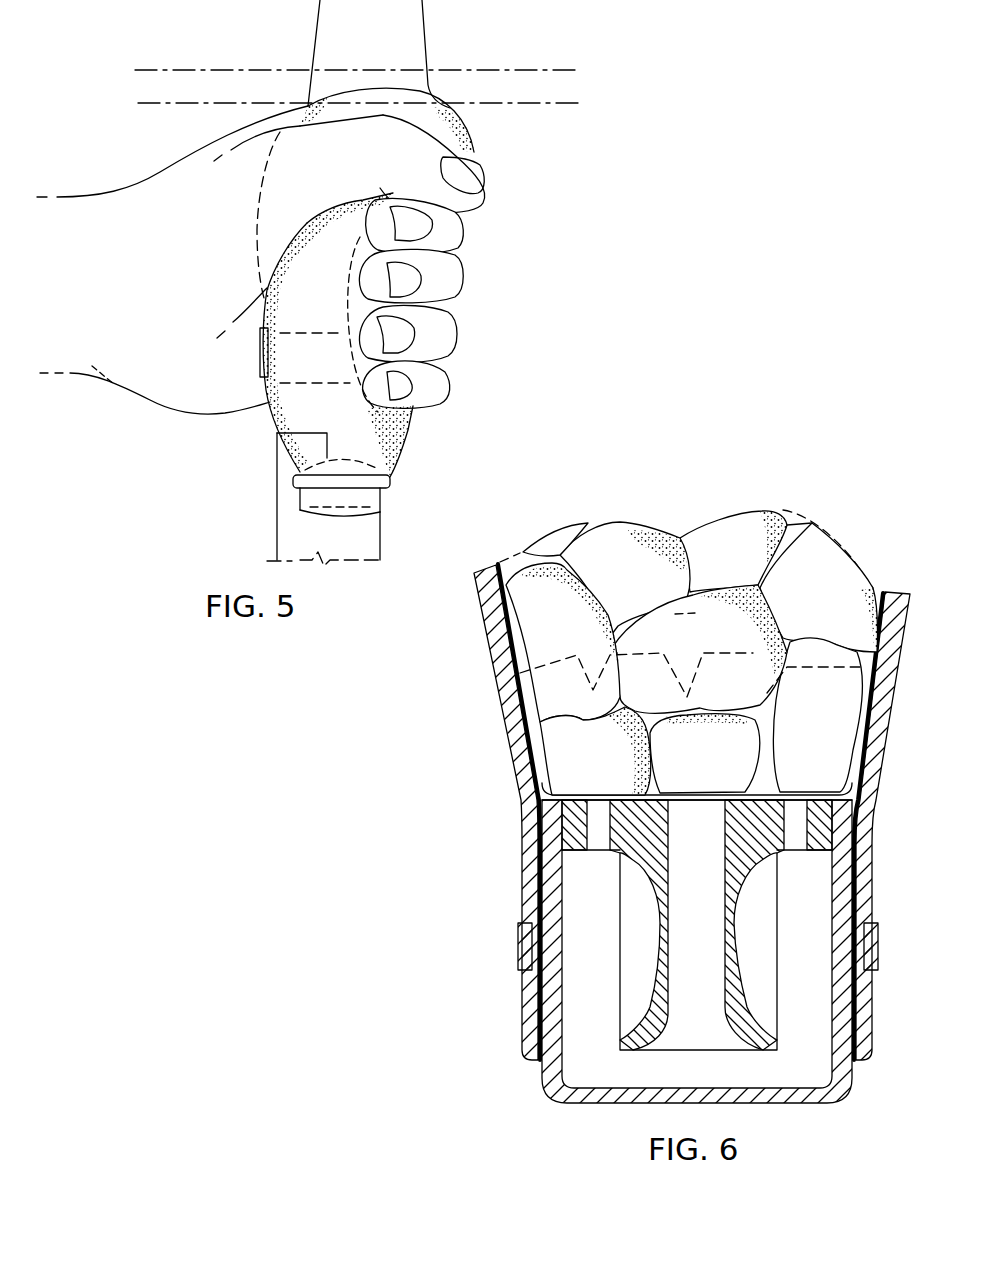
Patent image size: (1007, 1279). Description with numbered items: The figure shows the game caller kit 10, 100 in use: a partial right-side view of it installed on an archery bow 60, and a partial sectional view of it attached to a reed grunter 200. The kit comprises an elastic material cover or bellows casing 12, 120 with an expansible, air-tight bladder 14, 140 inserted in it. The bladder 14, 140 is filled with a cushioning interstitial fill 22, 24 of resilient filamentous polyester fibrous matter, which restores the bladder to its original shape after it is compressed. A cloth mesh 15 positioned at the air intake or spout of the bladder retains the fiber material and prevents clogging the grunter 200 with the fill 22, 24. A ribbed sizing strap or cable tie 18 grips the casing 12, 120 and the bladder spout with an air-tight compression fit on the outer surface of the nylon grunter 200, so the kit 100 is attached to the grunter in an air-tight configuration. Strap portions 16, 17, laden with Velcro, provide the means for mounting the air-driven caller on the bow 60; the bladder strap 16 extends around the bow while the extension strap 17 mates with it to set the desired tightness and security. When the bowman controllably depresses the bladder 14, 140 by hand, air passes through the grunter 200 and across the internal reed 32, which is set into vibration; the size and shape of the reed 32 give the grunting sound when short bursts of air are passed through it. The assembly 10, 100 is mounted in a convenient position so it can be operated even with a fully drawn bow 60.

In FIG. 5, the game caller kit 10 is at (439, 282).
In FIG. 6, the game caller kit 10 is at (628, 774).
In FIG. 5, the game caller kit 100 is at (478, 142).
In FIG. 6, the game caller kit 100 is at (628, 774).
In FIG. 6, the bellows casing 12 is at (652, 812).
In FIG. 6, the bellows casing 120 is at (520, 852).
In FIG. 6, the bladder 14 is at (623, 812).
In FIG. 6, the bladder 140 is at (517, 657).
In FIG. 6, the cloth mesh 15 is at (575, 758).
In FIG. 5, the strap 16 is at (261, 357).
In FIG. 5, the extension strap 17 is at (260, 366).
In FIG. 6, the cable tie 18 is at (518, 948).
In FIG. 6, the fill 22 is at (648, 617).
In FIG. 6, the fill 24 is at (648, 617).
In FIG. 6, the reed 32 is at (693, 987).
In FIG. 5, the archery bow 60 is at (265, 522).
In FIG. 5, the grunter 200 is at (327, 433).
In FIG. 6, the grunter 200 is at (543, 1077).